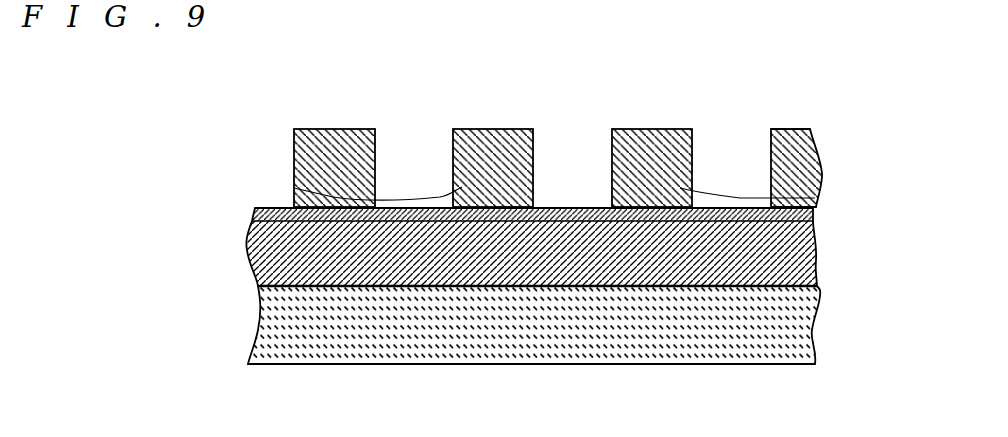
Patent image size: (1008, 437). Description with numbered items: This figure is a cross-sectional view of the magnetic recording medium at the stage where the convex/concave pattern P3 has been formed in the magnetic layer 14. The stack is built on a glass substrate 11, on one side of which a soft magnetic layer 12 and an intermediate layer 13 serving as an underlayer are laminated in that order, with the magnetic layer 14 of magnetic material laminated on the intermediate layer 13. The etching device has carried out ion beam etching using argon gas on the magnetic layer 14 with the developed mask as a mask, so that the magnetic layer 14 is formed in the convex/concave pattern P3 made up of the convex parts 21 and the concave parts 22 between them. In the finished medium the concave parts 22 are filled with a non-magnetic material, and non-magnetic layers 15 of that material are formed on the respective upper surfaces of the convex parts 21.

The glass substrate 11 is at (260, 327).
The soft magnetic layer 12 is at (249, 250).
The intermediate layer 13 is at (256, 212).
The magnetic layer 14 is at (269, 142).
The non-magnetic layer 15 is at (498, 143).
The convex part 21 is at (294, 148).
The concave part 22 is at (415, 183).
The convex/concave pattern P3 is at (600, 90).